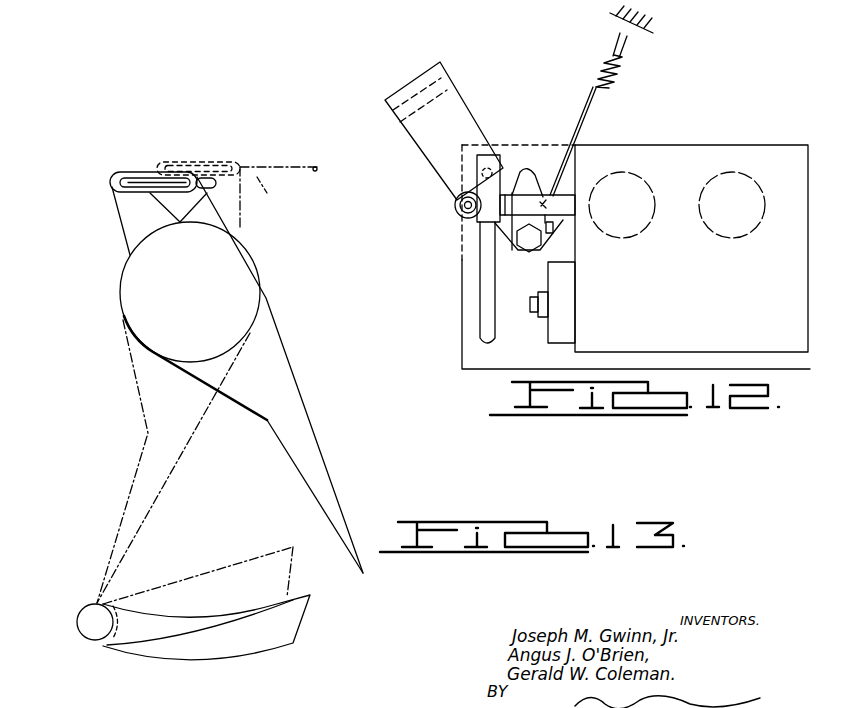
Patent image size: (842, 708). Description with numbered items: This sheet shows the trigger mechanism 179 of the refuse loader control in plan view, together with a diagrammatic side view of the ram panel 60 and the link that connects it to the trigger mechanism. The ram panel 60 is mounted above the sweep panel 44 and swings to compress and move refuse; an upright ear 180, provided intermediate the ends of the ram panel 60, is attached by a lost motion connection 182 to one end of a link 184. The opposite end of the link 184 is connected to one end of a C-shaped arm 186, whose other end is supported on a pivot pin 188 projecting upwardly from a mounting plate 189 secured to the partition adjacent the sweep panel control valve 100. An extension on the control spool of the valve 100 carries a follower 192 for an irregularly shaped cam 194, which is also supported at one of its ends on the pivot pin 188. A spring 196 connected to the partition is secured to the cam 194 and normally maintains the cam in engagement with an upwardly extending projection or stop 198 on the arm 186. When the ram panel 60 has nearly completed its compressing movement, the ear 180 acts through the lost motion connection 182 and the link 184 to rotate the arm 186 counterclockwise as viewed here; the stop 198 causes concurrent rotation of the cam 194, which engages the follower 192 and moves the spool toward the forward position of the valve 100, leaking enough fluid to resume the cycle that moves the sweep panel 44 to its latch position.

In FIG. 13, the sweep panel 44 is at (191, 602).
In FIG. 13, the ram panel 60 is at (333, 456).
In FIG. 12, the sweep panel control valve 100 is at (695, 153).
In FIG. 12, the trigger mechanism 179 is at (451, 239).
In FIG. 13, the upright ear 180 is at (125, 227).
In FIG. 13, the lost motion connection 182 is at (140, 171).
In FIG. 13, the link 184 is at (210, 188).
In FIG. 12, the link 184 is at (485, 297).
In FIG. 12, the C-shaped arm 186 is at (460, 107).
In FIG. 12, the pivot pin 188 is at (521, 252).
In FIG. 12, the mounting plate 189 is at (465, 348).
In FIG. 12, the follower 192 is at (455, 203).
In FIG. 12, the cam 194 is at (520, 170).
In FIG. 12, the spring 196 is at (607, 81).
In FIG. 12, the stop 198 is at (557, 234).